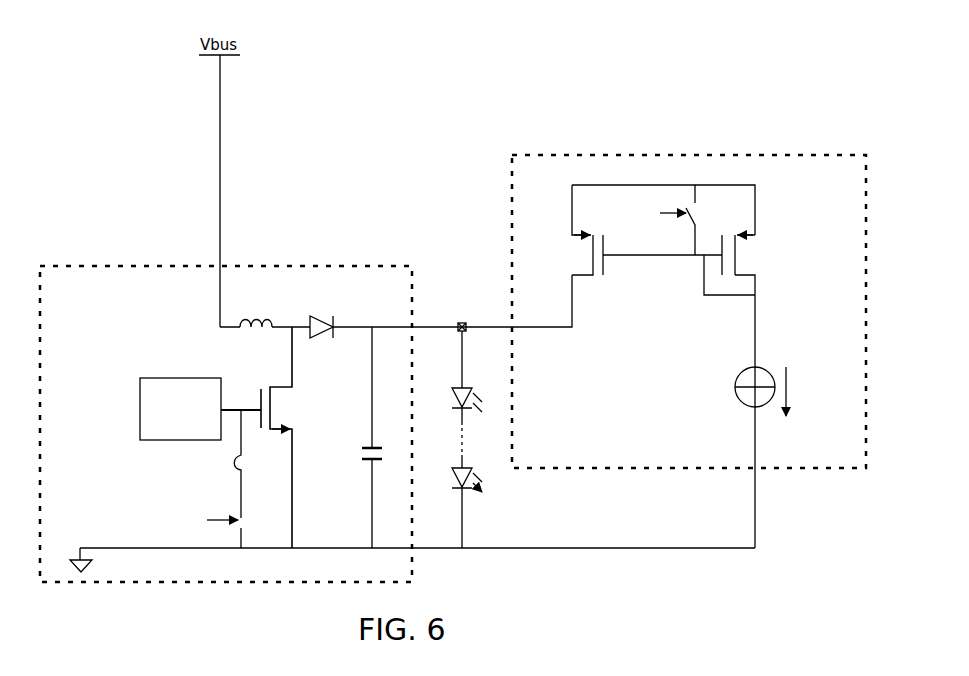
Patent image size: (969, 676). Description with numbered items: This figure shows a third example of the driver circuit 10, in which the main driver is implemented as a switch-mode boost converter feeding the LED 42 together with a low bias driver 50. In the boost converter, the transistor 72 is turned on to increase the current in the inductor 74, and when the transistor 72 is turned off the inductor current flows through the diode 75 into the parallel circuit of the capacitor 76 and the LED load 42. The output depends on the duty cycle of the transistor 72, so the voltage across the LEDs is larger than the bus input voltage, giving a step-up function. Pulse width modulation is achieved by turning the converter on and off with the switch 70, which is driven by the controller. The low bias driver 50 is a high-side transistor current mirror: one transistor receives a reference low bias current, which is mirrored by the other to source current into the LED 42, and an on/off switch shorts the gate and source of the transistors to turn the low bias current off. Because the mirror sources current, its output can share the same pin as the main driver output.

The LED lighting system 10 is at (503, 117).
The LED 42 is at (455, 352).
The low bias driver 50 is at (680, 155).
The switch 70 is at (237, 516).
The transistor 72 is at (282, 398).
The inductor 74 is at (250, 340).
The diode 75 is at (320, 341).
The capacitor 76 is at (370, 464).